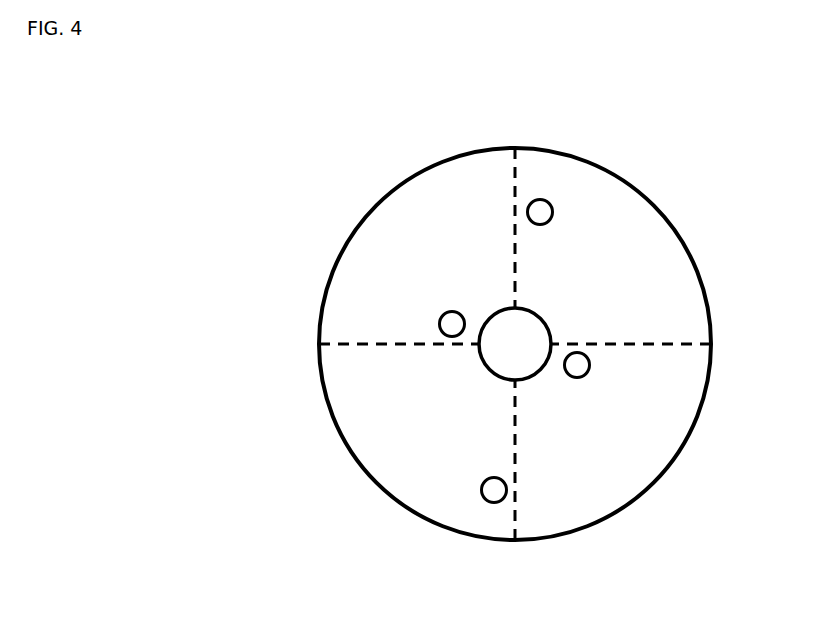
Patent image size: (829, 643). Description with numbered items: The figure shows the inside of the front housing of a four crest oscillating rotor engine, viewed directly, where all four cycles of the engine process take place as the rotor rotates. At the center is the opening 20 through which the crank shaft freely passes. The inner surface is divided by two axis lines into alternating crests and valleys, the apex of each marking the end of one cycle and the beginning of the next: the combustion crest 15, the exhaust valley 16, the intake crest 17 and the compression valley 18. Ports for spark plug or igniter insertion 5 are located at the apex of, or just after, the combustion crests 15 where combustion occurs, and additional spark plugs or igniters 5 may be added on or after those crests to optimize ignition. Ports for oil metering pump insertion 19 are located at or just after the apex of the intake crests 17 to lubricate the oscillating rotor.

The spark plug/igniter port 5 is at (542, 200).
The combustion crest 15 is at (521, 167).
The exhaust valley 16 is at (647, 243).
The intake crest 17 is at (700, 344).
The compression valley 18 is at (388, 225).
The oil metering pump port 19 is at (445, 323).
The crank shaft passage 20 is at (515, 344).